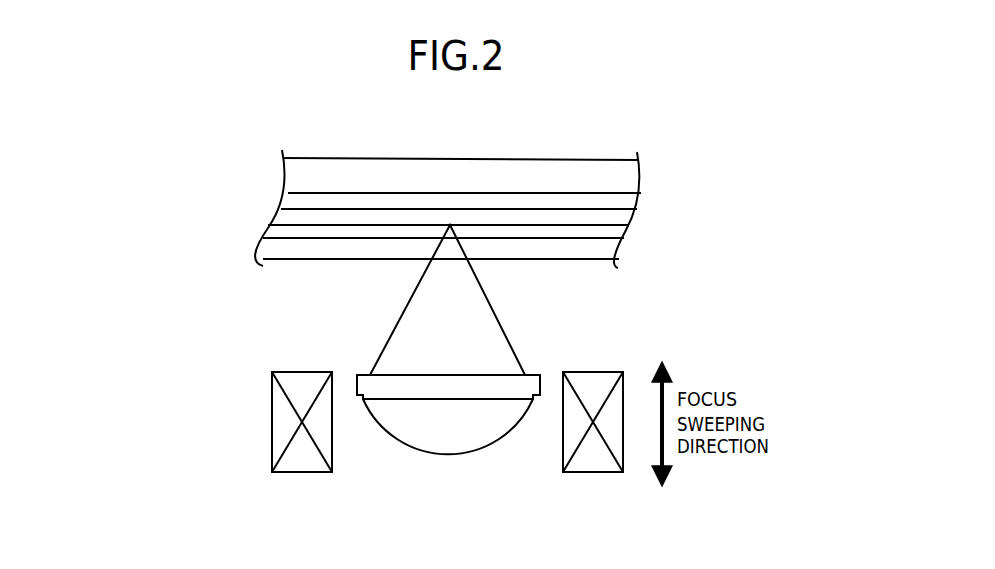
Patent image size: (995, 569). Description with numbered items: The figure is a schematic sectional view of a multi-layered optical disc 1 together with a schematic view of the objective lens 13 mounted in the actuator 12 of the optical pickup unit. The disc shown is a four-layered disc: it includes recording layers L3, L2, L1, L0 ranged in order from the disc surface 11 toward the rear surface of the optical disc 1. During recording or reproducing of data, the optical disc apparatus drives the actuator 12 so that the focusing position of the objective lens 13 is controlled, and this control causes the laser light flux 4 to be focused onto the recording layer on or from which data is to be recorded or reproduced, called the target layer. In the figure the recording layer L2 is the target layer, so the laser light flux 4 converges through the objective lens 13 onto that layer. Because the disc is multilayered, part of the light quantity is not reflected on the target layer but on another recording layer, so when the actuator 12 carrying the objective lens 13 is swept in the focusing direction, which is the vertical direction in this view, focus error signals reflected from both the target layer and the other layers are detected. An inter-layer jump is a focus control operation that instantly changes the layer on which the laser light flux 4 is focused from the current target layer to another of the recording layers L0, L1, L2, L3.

The optical disc 1 is at (349, 158).
The disc surface 11 is at (293, 260).
The recording layer L0 is at (628, 194).
The recording layer L1 is at (620, 210).
The recording layer L2 is at (612, 226).
The recording layer L3 is at (598, 240).
The laser light flux 4 is at (497, 330).
The actuator 12 is at (271, 421).
The objective lens 13 is at (473, 453).